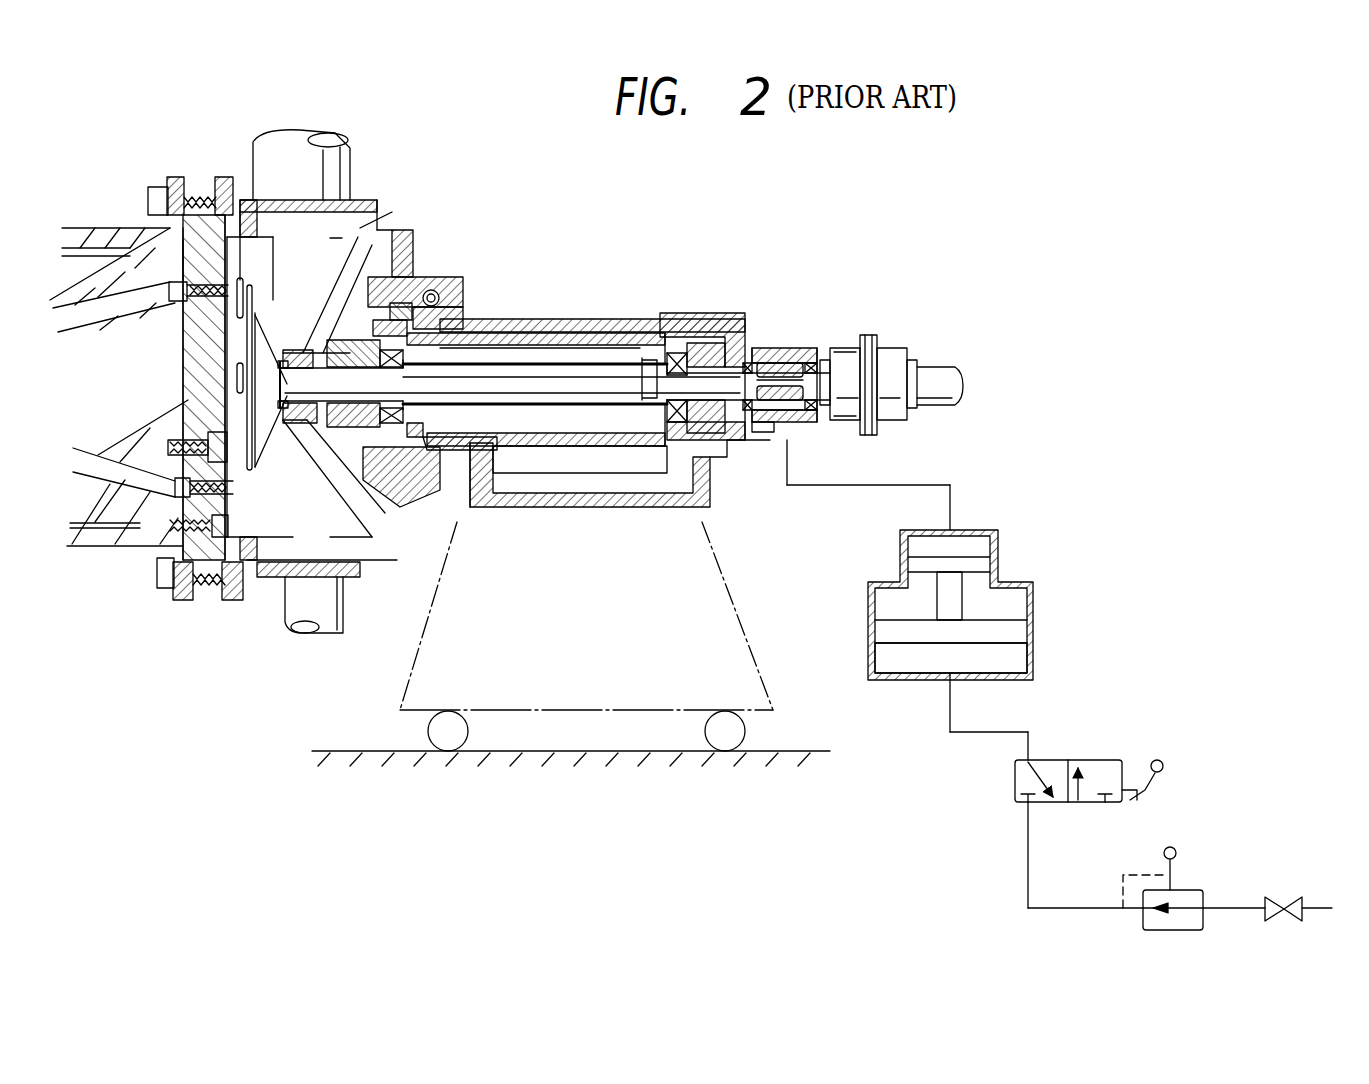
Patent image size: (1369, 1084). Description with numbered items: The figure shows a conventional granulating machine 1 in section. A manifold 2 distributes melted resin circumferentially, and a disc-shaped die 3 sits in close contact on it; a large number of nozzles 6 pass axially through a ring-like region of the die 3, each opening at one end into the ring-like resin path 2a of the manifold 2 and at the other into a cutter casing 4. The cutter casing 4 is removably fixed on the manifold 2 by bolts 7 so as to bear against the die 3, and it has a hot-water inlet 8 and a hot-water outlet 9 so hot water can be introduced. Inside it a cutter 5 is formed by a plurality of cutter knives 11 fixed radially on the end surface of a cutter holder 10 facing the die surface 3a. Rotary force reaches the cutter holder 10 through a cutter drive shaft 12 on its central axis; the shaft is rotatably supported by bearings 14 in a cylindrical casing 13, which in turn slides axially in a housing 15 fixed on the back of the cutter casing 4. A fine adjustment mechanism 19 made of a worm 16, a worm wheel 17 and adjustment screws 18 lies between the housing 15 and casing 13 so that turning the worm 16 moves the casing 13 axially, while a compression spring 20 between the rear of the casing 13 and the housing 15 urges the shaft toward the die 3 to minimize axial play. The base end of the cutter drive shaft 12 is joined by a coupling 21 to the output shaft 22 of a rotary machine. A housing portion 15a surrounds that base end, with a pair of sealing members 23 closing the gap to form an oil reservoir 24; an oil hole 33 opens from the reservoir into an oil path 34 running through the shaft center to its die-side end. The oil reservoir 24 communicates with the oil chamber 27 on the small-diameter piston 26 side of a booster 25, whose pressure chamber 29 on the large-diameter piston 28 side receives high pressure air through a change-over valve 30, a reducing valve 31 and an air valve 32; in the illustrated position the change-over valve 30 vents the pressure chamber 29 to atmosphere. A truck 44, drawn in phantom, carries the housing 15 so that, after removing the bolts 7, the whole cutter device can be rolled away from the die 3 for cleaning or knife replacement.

The granulating machine 1 is at (524, 228).
The manifold 2 is at (92, 230).
The ring-like resin path 2a is at (165, 470).
The die 3 is at (198, 215).
The die surface 3a is at (185, 305).
The cutter casing 4 is at (385, 215).
The cutter 5 is at (300, 278).
The nozzles 6 is at (175, 263).
The bolts 7 is at (152, 187).
The hot-water inlet 8 is at (350, 545).
The hot-water outlet 9 is at (345, 225).
The cutter holder 10 is at (262, 338).
The cutter knives 11 is at (243, 290).
The cutter drive shaft 12 is at (575, 364).
The cylindrical casing 13 is at (540, 333).
The bearings 14 is at (392, 367).
The housing 15 is at (620, 319).
The housing portion 15a is at (787, 348).
The worm 16 is at (440, 300).
The worm wheel 17 is at (462, 308).
The adjustment screws 18 is at (416, 281).
The fine adjustment mechanism 19 is at (431, 288).
The compression spring 20 is at (733, 460).
The coupling 21 is at (868, 335).
The output shaft 22 is at (928, 367).
The sealing members 23 is at (747, 360).
The oil reservoir 24 is at (797, 425).
The booster 25 is at (1040, 594).
The small-diameter piston 26 is at (985, 563).
The oil chamber 27 is at (915, 546).
The large-diameter piston 28 is at (1015, 634).
The pressure chamber 29 is at (888, 660).
The change-over valve 30 is at (1100, 760).
The reducing valve 31 is at (1190, 890).
The air valve 32 is at (1272, 897).
The oil hole 33 is at (775, 435).
The oil path 34 is at (768, 363).
The truck 44 is at (755, 630).